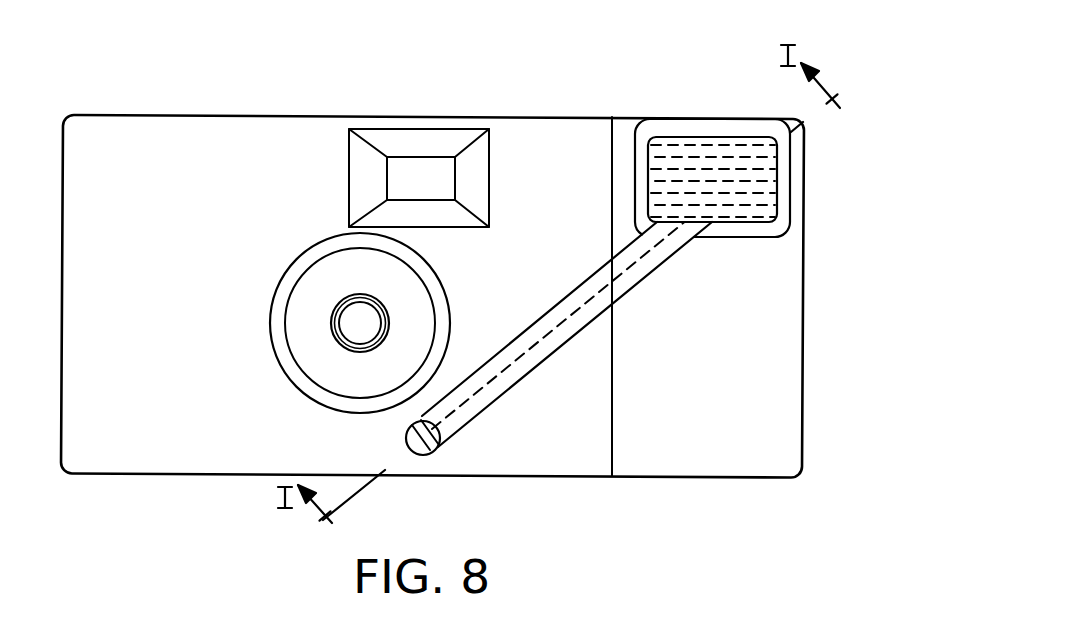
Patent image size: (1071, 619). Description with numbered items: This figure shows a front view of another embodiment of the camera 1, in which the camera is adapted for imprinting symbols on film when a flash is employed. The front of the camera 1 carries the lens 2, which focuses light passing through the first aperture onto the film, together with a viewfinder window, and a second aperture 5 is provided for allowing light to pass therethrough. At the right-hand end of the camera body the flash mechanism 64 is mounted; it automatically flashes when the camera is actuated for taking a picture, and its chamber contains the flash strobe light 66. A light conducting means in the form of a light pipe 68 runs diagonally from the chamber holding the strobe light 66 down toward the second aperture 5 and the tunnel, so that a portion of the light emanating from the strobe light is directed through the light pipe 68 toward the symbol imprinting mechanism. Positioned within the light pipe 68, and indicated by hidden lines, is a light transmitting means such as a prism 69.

The camera 1 is at (557, 140).
The lens 2 is at (345, 318).
The second aperture 5 is at (433, 452).
The flash mechanism 64 is at (787, 425).
The flash strobe light 66 is at (700, 137).
The light conducting means (light pipe) 68 is at (565, 325).
The prism 69 is at (612, 295).